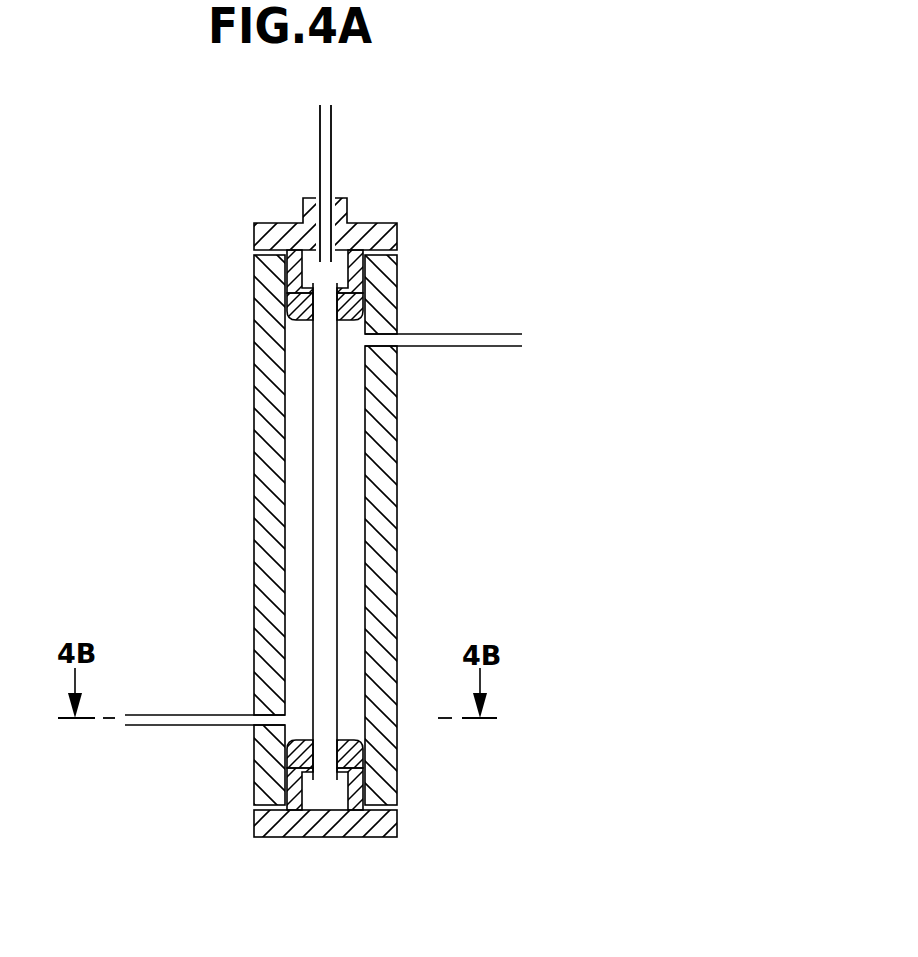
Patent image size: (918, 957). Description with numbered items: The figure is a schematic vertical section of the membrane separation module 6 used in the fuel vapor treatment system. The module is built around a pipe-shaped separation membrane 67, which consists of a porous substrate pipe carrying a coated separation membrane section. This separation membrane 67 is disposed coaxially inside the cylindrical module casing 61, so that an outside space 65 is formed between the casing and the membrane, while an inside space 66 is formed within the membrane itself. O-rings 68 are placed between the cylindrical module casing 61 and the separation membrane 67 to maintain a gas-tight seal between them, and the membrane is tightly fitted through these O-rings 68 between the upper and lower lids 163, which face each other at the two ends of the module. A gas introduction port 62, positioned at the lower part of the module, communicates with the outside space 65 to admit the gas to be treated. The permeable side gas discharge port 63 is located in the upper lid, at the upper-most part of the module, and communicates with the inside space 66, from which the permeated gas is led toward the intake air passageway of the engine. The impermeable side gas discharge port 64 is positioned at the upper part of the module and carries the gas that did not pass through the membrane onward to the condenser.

The membrane separation module 6 is at (238, 331).
The cylindrical module casing 61 is at (380, 553).
The gas introduction port 62 is at (270, 713).
The permeable side gas discharge port 63 is at (325, 217).
The impermeable side gas discharge port 64 is at (380, 335).
The outside space 65 is at (297, 485).
The inside space 66 is at (325, 397).
The separation membrane 67 is at (337, 592).
The O-rings 68 is at (350, 310).
The upper and lower lids 163 is at (275, 232).